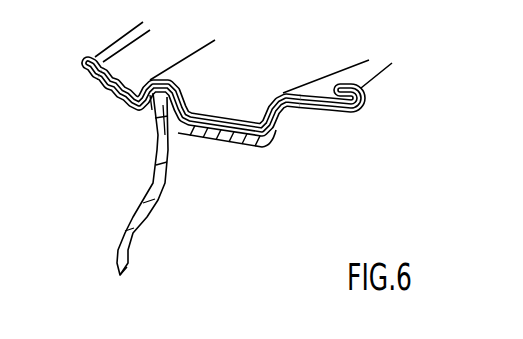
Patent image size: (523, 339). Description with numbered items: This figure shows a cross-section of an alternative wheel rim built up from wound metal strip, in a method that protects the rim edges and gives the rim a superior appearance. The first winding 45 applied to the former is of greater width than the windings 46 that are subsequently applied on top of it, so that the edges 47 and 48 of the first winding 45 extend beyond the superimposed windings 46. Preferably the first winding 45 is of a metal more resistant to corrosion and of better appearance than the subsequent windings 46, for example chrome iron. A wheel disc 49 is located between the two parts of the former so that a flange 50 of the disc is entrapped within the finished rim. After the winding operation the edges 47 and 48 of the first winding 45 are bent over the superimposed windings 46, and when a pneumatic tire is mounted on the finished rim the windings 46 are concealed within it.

The first winding 45 is at (285, 137).
The subsequent windings 46 is at (125, 77).
The edge of first winding 47 is at (103, 50).
The edge of first winding 48 is at (382, 80).
The wheel disc 49 is at (163, 190).
The flange 50 is at (147, 115).